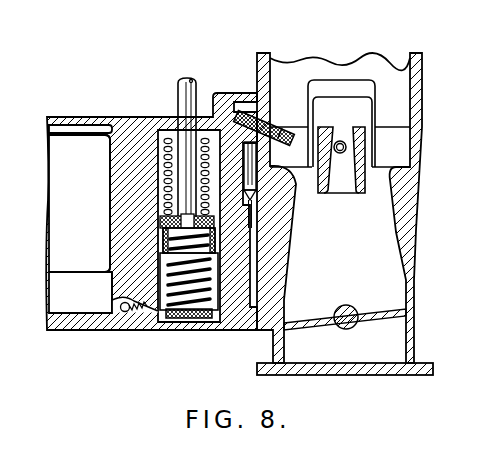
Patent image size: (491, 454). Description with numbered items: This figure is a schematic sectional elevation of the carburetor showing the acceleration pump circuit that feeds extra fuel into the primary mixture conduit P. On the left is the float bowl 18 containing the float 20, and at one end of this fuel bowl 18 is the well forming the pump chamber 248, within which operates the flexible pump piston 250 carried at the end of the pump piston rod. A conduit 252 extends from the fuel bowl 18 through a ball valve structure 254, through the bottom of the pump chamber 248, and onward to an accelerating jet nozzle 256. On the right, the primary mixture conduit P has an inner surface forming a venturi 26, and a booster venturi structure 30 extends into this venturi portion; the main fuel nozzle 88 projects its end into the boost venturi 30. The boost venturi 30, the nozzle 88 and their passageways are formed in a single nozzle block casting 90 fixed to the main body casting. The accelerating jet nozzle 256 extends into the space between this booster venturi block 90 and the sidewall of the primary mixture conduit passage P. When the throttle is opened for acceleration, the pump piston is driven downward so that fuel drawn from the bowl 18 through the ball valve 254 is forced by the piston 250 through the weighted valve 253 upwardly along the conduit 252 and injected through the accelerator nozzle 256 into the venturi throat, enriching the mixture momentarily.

The float bowl 18 is at (110, 281).
The float 20 is at (61, 189).
The venturi 26 is at (300, 193).
The booster venturi structure 30 is at (371, 182).
The nozzle 88 is at (340, 141).
The nozzle block casting 90 is at (390, 143).
The pump chamber 248 is at (165, 140).
The flexible pump piston 250 is at (162, 232).
The conduit 252 is at (221, 323).
The ball valve structure 254 is at (119, 312).
The accelerating jet nozzle 256 is at (283, 133).
The weighted valve 253 is at (257, 172).
The primary mixture conduit P is at (405, 60).